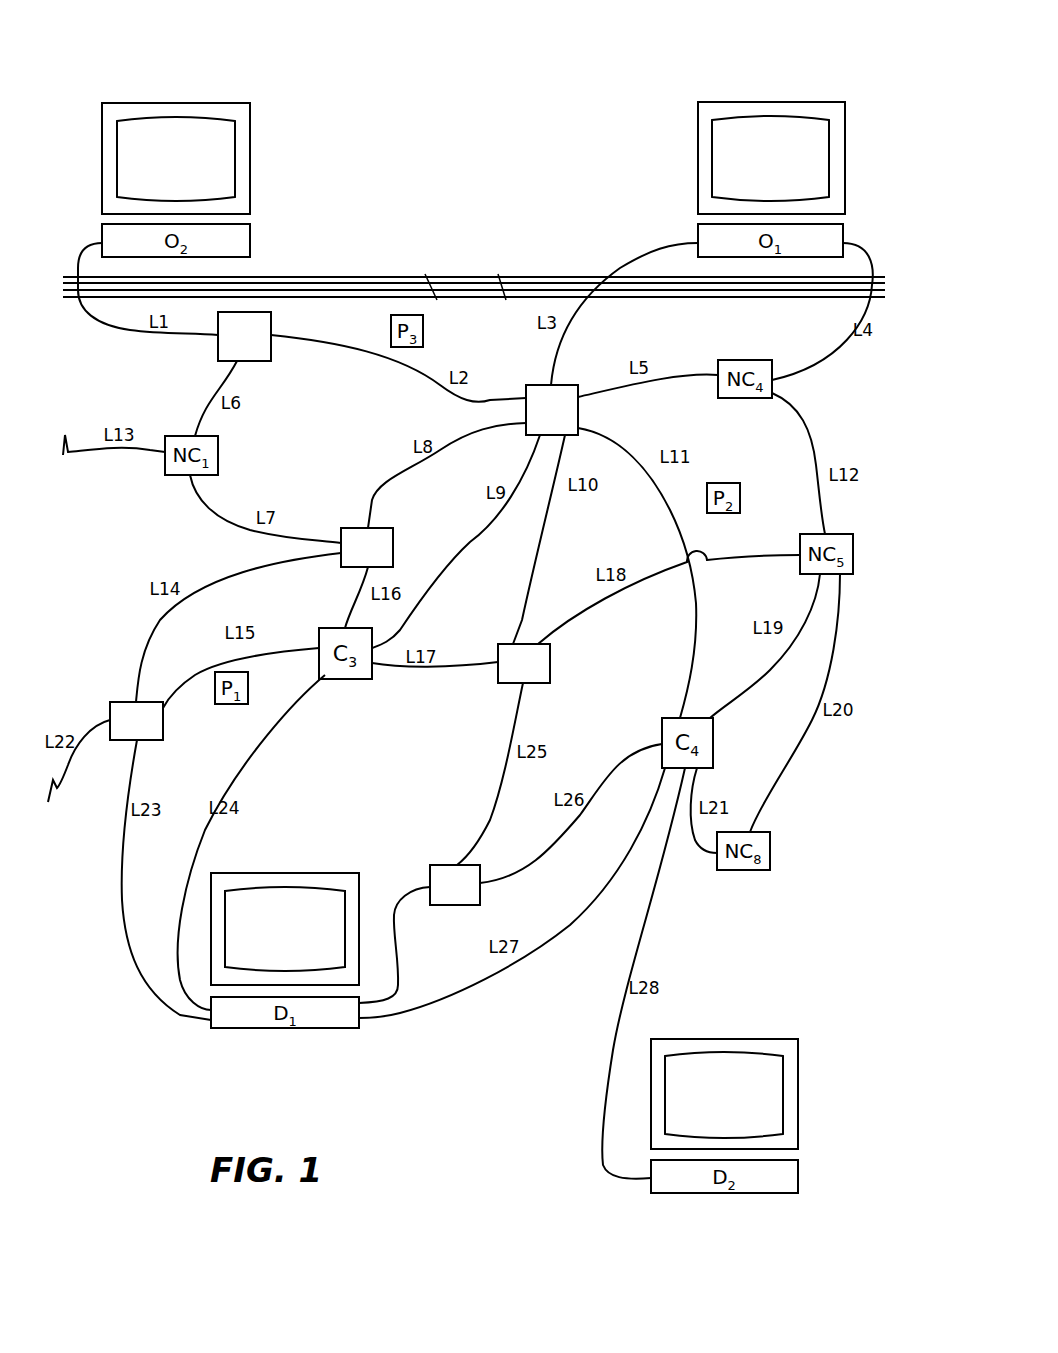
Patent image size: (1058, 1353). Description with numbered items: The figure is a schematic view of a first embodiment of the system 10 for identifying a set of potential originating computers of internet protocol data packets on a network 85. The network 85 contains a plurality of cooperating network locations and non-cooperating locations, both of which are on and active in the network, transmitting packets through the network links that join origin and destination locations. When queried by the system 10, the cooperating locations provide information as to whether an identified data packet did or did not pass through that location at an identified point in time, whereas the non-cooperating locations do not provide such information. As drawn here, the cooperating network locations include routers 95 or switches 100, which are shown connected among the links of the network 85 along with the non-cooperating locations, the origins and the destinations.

The system 10 is at (607, 126).
The network 85 is at (467, 993).
The router 95 is at (220, 344).
The switch 100 is at (578, 404).